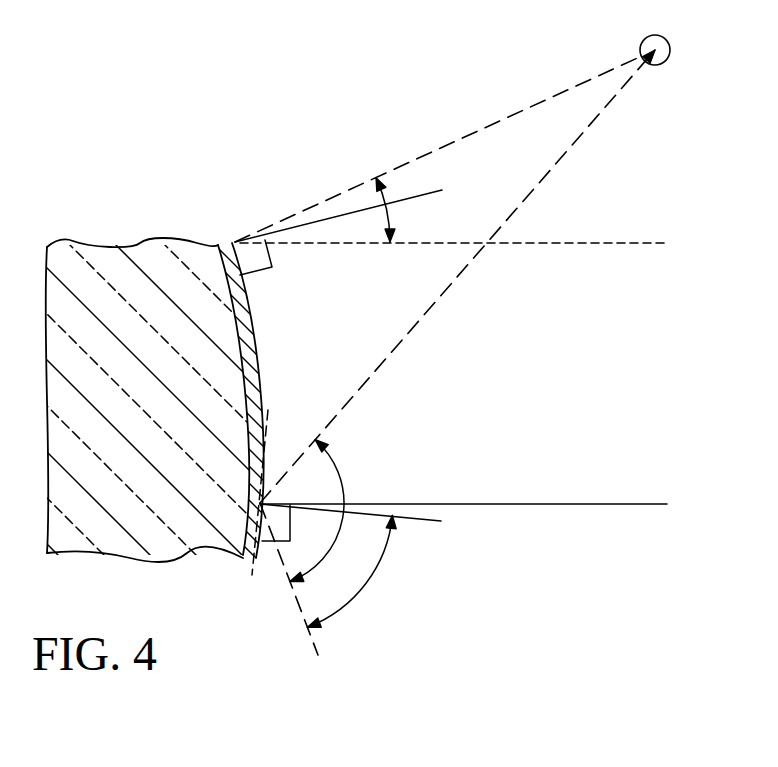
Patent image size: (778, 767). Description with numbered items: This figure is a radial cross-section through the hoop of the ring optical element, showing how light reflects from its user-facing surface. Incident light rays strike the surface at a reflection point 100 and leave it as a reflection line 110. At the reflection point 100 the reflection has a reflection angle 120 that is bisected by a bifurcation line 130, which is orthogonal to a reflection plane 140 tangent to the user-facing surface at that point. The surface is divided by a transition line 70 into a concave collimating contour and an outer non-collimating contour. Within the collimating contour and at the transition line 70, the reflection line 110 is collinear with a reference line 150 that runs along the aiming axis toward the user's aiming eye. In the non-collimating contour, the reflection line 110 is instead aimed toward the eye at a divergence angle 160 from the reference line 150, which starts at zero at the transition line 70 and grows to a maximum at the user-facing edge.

The transition line 70 is at (218, 245).
The reflection point 100 is at (235, 242).
The reflection line 110 is at (592, 244).
The reflection angle 120 is at (330, 458).
The bifurcation line 130 is at (415, 197).
The reflection plane 140 is at (268, 445).
The reference line 150 is at (637, 503).
The divergence angle 160 is at (357, 590).